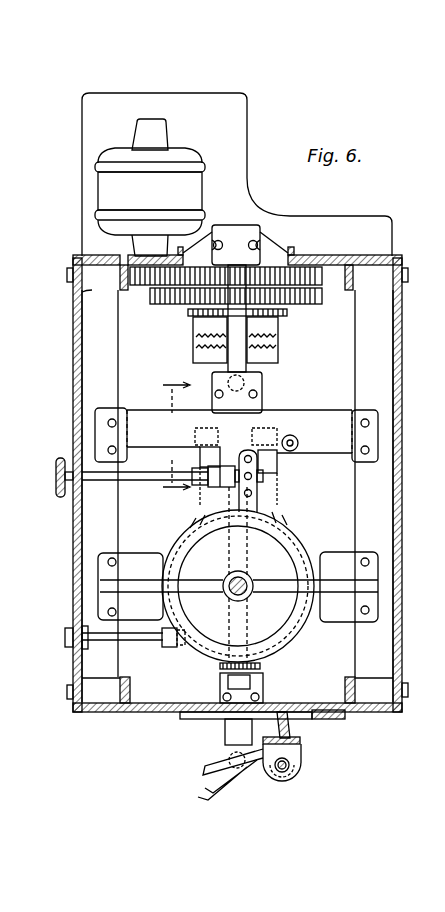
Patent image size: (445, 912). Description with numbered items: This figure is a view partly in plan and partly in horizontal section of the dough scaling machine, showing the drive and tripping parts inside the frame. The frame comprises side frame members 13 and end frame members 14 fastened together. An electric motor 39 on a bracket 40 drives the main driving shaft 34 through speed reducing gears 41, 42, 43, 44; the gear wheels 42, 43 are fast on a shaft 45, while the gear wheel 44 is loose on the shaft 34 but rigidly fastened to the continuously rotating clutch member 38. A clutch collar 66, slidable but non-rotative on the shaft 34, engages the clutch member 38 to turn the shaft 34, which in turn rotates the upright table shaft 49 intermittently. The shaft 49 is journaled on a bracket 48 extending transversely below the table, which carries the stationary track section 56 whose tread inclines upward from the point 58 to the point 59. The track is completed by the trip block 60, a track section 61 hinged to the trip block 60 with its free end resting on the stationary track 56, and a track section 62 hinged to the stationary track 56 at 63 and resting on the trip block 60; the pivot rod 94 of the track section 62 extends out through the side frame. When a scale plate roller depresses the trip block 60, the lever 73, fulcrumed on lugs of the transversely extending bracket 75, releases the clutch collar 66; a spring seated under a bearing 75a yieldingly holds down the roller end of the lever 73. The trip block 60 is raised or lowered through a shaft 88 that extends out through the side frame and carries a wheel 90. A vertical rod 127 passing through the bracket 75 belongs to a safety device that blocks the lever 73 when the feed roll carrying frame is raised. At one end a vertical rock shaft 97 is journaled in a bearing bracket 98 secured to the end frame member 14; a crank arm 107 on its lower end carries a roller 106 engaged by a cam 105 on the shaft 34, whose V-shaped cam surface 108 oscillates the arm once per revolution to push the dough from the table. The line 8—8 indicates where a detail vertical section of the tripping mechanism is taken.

The side frame members 13 is at (73, 392).
The end frame members 14 is at (317, 257).
The electric motor 39 is at (150, 187).
The bracket 40 is at (235, 226).
The speed reducing gear 41 is at (130, 282).
The gear wheel 42 is at (320, 275).
The gear wheel 43 is at (320, 302).
The gear wheel 44 is at (152, 306).
The clutch member 38 is at (220, 318).
The shaft 45 is at (237, 327).
The clutch collar 66 is at (270, 355).
The bearing 75a is at (263, 390).
The bracket 75 is at (145, 430).
The vertical rod 127 is at (298, 441).
The lever 73 is at (263, 462).
The wheel 90 is at (65, 483).
The shaft 88 is at (115, 478).
The section line 8 is at (176, 434).
The main driving shaft 34 is at (235, 498).
The trip block 60 is at (257, 510).
The track section 61 is at (290, 528).
The track section 62 is at (173, 542).
The point 58 is at (306, 560).
The stationary track section 56 is at (288, 637).
The upright shaft 49 is at (226, 596).
The bracket 48 is at (343, 576).
The point 59 is at (263, 657).
The pivot rod 94 is at (148, 638).
The hinge 63 is at (177, 640).
The bearing bracket 98 is at (300, 740).
The vertical rock shaft 97 is at (287, 772).
The crank arm 107 is at (258, 768).
The roller 106 is at (222, 752).
The cam surface 108 is at (203, 788).
The cam 105 is at (213, 790).